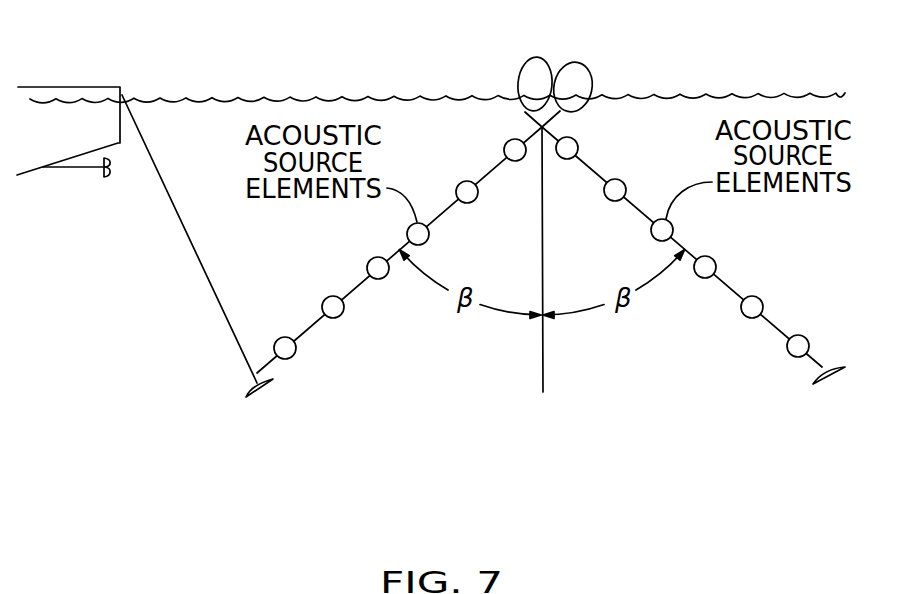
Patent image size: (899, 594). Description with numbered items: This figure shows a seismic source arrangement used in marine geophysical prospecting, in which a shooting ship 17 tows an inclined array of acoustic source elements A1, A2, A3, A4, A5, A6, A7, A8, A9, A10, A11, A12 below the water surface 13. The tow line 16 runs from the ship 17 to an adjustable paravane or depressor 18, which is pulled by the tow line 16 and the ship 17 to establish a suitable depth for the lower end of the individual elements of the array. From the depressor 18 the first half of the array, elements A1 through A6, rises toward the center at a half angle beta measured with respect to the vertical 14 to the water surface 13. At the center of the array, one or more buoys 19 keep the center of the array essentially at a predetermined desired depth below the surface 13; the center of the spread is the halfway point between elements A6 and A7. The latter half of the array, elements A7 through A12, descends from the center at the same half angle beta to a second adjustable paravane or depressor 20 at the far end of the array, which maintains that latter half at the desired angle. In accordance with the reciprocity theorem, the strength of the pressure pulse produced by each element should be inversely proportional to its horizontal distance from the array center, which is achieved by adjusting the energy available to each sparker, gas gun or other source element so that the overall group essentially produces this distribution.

The water surface 13 is at (193, 100).
The vertical 14 is at (545, 360).
The tow line 16 is at (203, 273).
The shooting ship 17 is at (50, 86).
The adjustable paravane or depressor 18 is at (255, 399).
The buoys 19 is at (547, 56).
The second adjustable paravane or depressor 20 is at (832, 388).
The acoustic source element A1 is at (268, 339).
The acoustic source element A2 is at (313, 302).
The acoustic source element A3 is at (358, 264).
The acoustic source element A4 is at (399, 229).
The acoustic source element A5 is at (446, 185).
The acoustic source element A6 is at (494, 144).
The acoustic source element A7 is at (587, 143).
The acoustic source element A8 is at (634, 184).
The acoustic source element A9 is at (679, 225).
The acoustic source element A10 is at (731, 262).
The acoustic source element A11 is at (778, 302).
The acoustic source element A12 is at (824, 346).